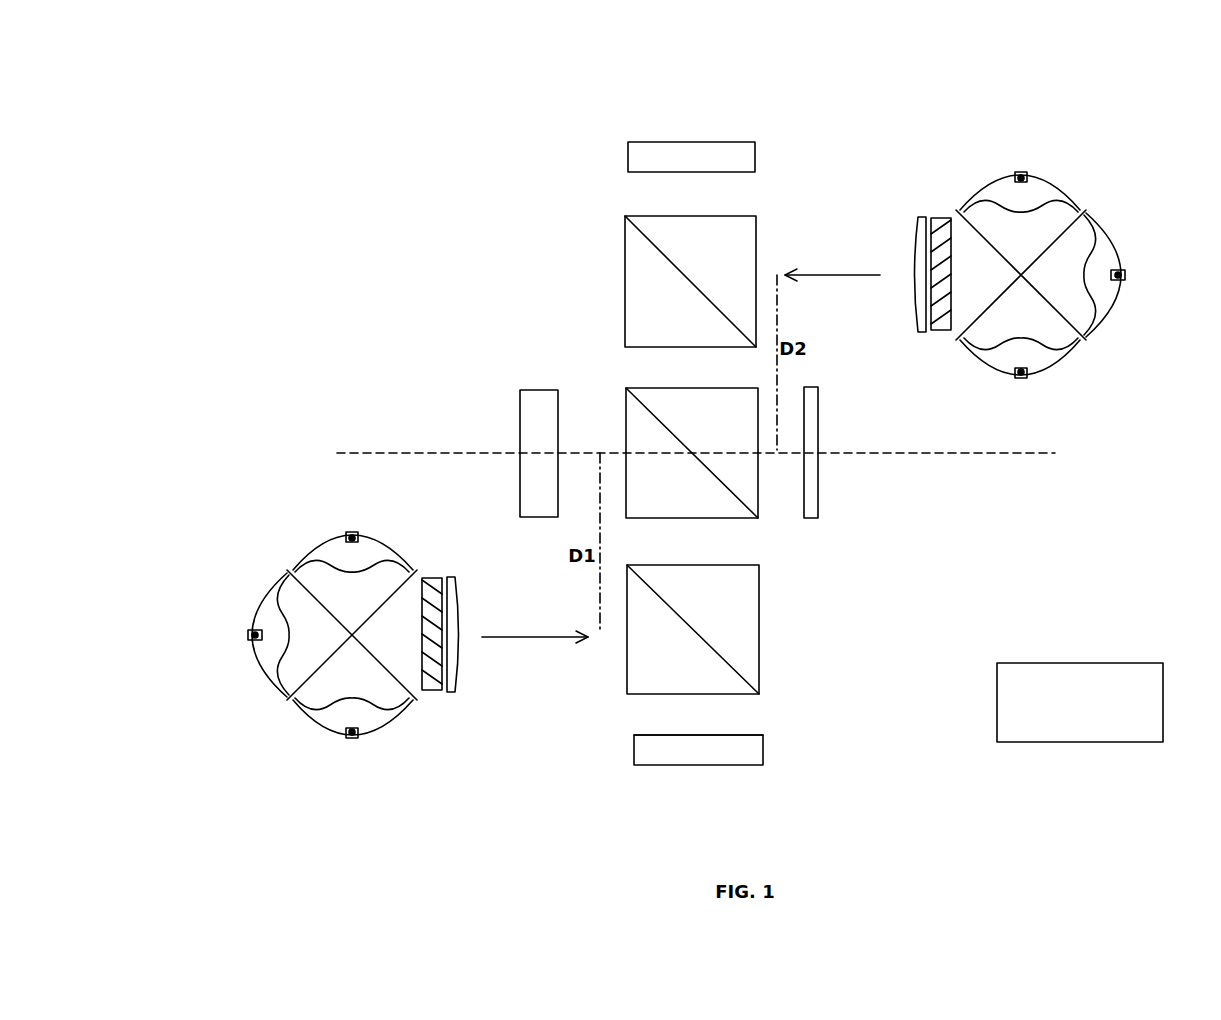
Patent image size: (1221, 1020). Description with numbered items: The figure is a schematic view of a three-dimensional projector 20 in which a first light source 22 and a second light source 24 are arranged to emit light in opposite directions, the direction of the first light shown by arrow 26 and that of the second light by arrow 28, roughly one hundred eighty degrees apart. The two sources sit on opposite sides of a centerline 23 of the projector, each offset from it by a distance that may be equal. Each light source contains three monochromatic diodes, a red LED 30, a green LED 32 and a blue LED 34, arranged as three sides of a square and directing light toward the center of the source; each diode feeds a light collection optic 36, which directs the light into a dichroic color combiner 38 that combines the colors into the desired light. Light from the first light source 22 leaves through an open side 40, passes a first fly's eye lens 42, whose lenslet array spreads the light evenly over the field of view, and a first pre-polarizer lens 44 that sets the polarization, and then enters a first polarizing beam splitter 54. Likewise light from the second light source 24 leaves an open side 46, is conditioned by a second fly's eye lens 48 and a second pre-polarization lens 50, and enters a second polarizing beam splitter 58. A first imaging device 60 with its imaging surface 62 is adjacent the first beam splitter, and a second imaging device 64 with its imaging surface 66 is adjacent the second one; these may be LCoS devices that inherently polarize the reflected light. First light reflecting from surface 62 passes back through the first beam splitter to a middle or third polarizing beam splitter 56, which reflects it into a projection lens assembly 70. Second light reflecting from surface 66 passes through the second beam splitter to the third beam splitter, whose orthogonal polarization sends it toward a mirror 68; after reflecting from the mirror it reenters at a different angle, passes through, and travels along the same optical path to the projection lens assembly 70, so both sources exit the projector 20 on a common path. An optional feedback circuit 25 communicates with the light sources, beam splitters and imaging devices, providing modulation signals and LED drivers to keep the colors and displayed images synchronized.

The three-dimensional projector 20 is at (338, 197).
The first light source 22 is at (267, 730).
The centerline 23 is at (696, 455).
The second light source 24 is at (1075, 118).
The feedback circuit 25 is at (1107, 662).
The arrow 26 is at (563, 636).
The arrow 28 is at (808, 275).
The red LED 30 is at (352, 533).
The green LED 32 is at (248, 633).
The blue LED 34 is at (352, 733).
The light collection optic 36 is at (380, 538).
The dichroic color combiner 38 is at (310, 588).
The open side 40 is at (427, 703).
The first fly's eye lens 42 is at (437, 577).
The first pre-polarizer lens 44 is at (457, 688).
The open side 46 is at (953, 345).
The second fly's eye lens 48 is at (938, 218).
The second pre-polarization lens 50 is at (915, 218).
The first polarizing beam splitter 54 is at (760, 618).
The third polarizing beam splitter 56 is at (757, 480).
The second polarizing beam splitter 58 is at (623, 283).
The first imaging device 60 is at (753, 758).
The imaging surface 62 is at (733, 735).
The second imaging device 64 is at (655, 142).
The imaging surface 66 is at (640, 173).
The mirror 68 is at (820, 457).
The projection lens assembly 70 is at (528, 388).